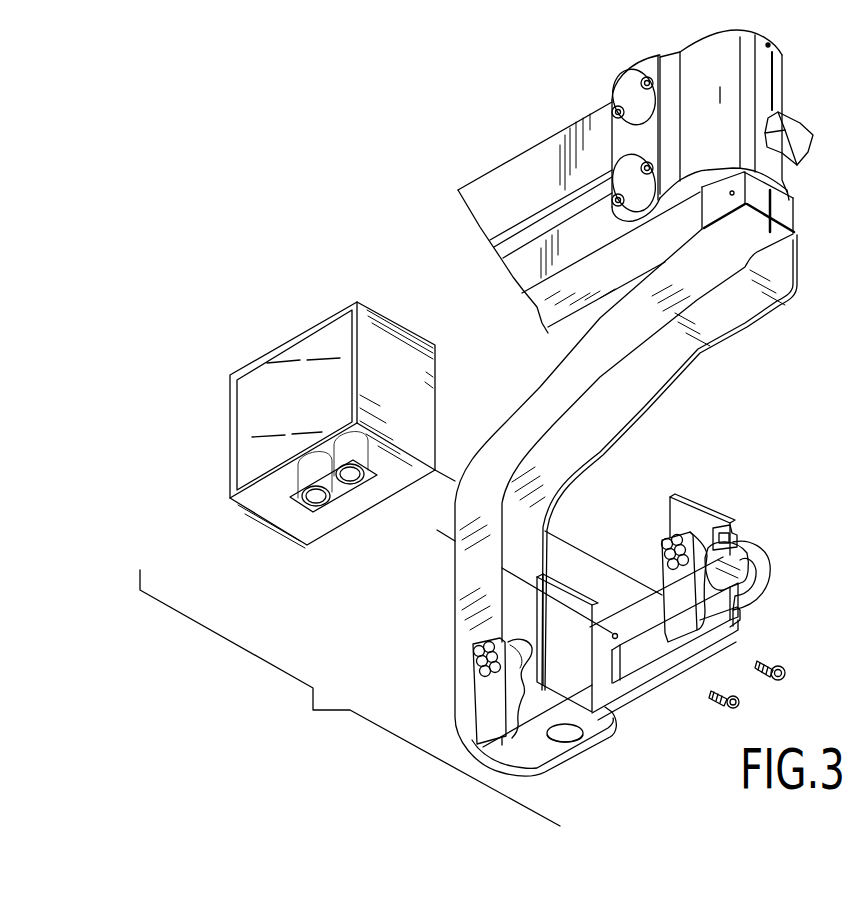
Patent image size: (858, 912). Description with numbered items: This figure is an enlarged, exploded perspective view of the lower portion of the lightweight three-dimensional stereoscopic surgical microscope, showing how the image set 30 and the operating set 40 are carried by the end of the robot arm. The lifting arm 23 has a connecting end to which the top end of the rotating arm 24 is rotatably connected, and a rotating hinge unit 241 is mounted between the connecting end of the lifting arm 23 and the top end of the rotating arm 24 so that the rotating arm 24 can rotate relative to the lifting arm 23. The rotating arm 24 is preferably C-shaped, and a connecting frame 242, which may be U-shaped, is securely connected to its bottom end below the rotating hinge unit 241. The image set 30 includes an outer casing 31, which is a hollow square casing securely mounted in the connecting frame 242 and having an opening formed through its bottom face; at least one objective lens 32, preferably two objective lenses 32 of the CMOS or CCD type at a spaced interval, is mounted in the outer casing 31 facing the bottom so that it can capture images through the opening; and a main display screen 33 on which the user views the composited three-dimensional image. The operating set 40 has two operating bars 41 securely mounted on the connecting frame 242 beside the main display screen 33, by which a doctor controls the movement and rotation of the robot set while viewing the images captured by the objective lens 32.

The lifting arm 23 is at (512, 141).
The rotating arm 24 is at (700, 403).
The rotating hinge unit 241 is at (770, 72).
The connecting frame 242 is at (635, 690).
The image set 30 is at (284, 409).
The outer casing 31 is at (403, 340).
The objective lens 32 is at (310, 493).
The main display screen 33 is at (302, 358).
The operating set 40 is at (592, 607).
The operating bar 41 is at (663, 585).